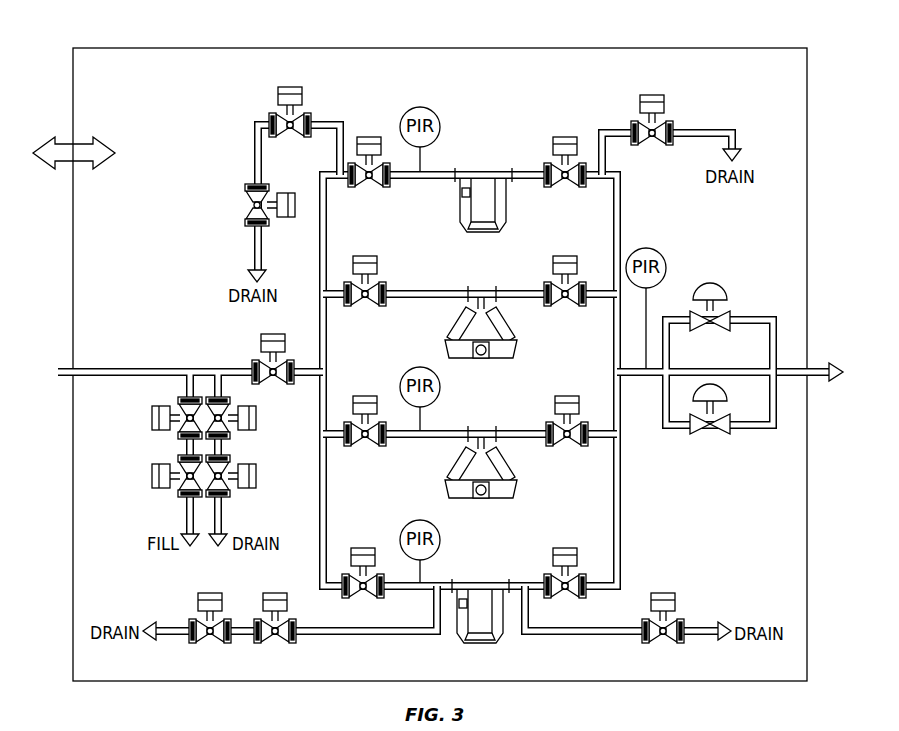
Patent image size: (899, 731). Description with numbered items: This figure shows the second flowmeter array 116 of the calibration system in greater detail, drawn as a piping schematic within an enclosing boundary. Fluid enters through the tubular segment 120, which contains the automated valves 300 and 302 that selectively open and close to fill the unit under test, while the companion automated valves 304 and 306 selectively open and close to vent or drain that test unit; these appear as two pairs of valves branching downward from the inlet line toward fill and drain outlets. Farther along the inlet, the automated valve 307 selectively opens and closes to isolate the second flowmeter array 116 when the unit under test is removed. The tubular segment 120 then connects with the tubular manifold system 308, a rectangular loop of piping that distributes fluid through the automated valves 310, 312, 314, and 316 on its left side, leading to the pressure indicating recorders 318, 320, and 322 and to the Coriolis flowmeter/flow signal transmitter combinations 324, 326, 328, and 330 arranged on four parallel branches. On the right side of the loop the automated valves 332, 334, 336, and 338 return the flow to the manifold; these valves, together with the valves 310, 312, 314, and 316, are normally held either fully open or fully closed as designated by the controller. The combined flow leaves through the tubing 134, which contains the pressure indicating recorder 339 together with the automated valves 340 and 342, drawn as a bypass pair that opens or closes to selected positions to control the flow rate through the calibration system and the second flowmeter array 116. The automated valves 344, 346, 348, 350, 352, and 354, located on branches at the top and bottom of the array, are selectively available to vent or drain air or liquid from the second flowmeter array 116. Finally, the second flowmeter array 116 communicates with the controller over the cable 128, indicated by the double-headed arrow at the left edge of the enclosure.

The second flowmeter array 116 is at (699, 47).
The tubular segment 120 is at (60, 367).
The cable 128 is at (65, 147).
The tubing 134 is at (820, 368).
The automated valve 300 is at (152, 415).
The automated valve 302 is at (152, 478).
The automated valve 304 is at (256, 413).
The automated valve 306 is at (256, 477).
The automated valve 307 is at (262, 348).
The tubular manifold system 308 is at (327, 320).
The automated valve 310 is at (373, 137).
The automated valve 312 is at (363, 256).
The automated valve 314 is at (360, 396).
The automated valve 316 is at (368, 548).
The pressure indicating recorder 318 is at (424, 107).
The pressure indicating recorder 320 is at (441, 375).
The pressure indicating recorder 322 is at (418, 520).
The Coriolis flowmeter/flow signal transmitter combination 324 is at (461, 200).
The Coriolis flowmeter/flow signal transmitter combination 326 is at (518, 342).
The Coriolis flowmeter/flow signal transmitter combination 328 is at (518, 472).
The Coriolis flowmeter/flow signal transmitter combination 330 is at (500, 642).
The automated valve 332 is at (570, 137).
The automated valve 334 is at (572, 256).
The automated valve 336 is at (598, 379).
The automated valve 338 is at (568, 548).
The pressure indicating recorder 339 is at (660, 254).
The automated valve 340 is at (718, 285).
The automated valve 342 is at (716, 436).
The automated valve 344 is at (249, 205).
The automated valve 346 is at (282, 97).
The automated valve 348 is at (664, 105).
The automated valve 350 is at (664, 593).
The automated valve 352 is at (277, 593).
The automated valve 354 is at (209, 593).